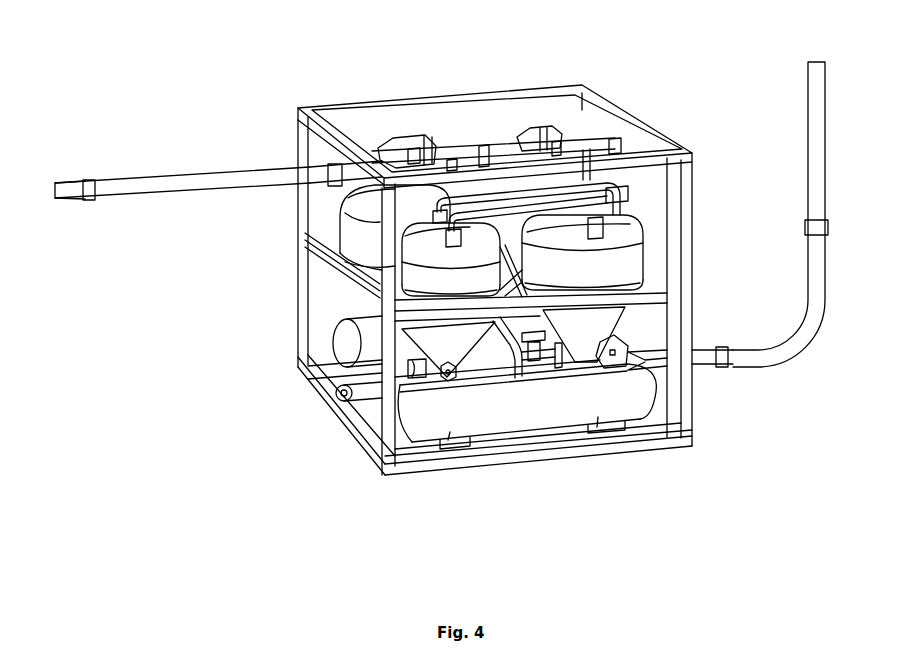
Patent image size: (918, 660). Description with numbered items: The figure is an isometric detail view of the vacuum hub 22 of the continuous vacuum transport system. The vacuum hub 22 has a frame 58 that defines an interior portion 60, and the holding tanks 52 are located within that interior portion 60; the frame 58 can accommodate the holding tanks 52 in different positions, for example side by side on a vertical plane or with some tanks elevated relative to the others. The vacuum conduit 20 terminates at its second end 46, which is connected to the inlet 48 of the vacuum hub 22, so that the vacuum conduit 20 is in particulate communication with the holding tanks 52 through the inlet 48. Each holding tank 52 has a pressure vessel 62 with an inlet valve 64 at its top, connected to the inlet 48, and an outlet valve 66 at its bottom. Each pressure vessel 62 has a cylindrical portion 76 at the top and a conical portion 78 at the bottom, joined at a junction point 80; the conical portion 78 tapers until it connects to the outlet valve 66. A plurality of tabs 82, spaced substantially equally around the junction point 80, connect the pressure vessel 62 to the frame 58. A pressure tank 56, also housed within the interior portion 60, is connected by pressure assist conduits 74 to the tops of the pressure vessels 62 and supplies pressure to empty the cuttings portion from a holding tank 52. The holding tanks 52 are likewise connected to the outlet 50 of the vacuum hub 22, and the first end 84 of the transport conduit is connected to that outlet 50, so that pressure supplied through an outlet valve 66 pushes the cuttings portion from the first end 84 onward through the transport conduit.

The vacuum conduit 20 is at (58, 202).
The vacuum hub 22 is at (449, 244).
The second end 46 is at (217, 193).
The inlet 48 is at (499, 152).
The outlet 50 is at (760, 214).
The holding tanks 52 is at (507, 187).
The pressure tank 56 is at (350, 326).
The frame 58 is at (340, 420).
The interior portion 60 is at (465, 118).
The pressure vessel 62 is at (340, 211).
The inlet valve 64 is at (411, 146).
The outlet valve 66 is at (629, 341).
The pressure assist conduits 74 is at (497, 336).
The cylindrical portion 76 is at (491, 240).
The conical portion 78 is at (513, 342).
The junction point 80 is at (330, 250).
The tabs 82 is at (378, 272).
The first end 84 is at (803, 315).